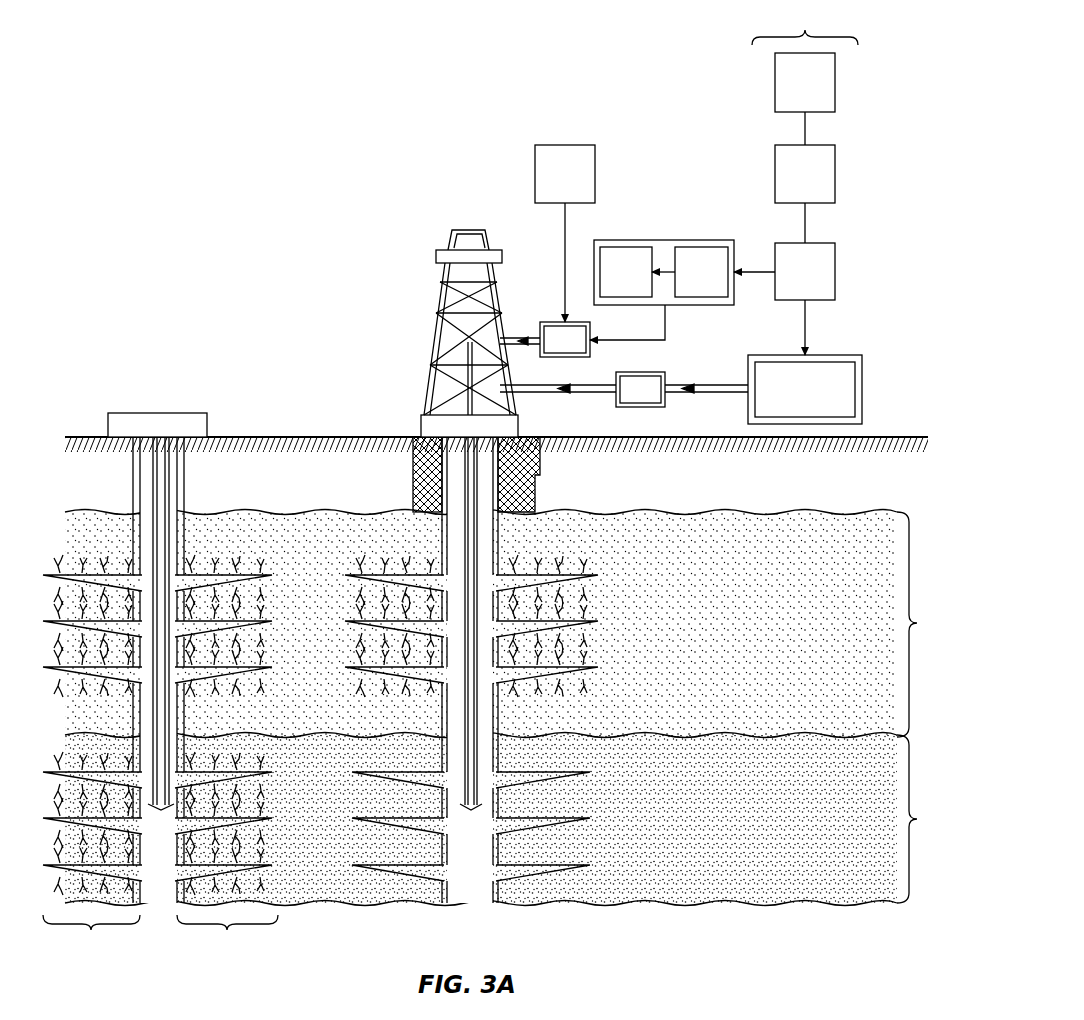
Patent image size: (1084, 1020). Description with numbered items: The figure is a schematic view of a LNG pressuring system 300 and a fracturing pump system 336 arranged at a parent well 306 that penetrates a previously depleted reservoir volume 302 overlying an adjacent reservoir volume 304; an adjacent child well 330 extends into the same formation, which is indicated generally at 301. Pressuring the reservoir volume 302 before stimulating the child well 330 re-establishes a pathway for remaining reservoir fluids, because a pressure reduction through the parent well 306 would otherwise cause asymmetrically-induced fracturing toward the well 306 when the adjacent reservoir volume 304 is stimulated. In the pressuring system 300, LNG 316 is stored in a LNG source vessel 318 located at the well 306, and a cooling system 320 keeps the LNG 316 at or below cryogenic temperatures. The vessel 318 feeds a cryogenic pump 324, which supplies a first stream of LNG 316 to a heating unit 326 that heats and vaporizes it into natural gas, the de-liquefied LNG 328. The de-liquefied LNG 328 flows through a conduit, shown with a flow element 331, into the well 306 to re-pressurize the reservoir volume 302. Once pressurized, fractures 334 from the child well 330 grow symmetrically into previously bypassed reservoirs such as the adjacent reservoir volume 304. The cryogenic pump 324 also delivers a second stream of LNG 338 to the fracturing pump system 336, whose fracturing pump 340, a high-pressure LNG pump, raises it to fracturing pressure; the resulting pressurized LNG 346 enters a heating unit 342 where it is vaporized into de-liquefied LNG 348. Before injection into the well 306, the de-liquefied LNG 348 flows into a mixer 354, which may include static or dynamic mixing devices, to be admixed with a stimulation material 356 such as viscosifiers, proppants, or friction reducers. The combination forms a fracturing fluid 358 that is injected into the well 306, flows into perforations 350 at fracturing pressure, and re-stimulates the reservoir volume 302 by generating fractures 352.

The LNG pressuring system 300 is at (717, 214).
The subterranean formation 301 is at (820, 495).
The reservoir volume 302 is at (514, 624).
The adjacent reservoir volume 304 is at (514, 819).
The parent well 306 is at (455, 497).
The LNG 316 is at (812, 228).
The LNG source vessel 318 is at (805, 174).
The cooling system 320 is at (805, 82).
The cryogenic pump 324 is at (805, 271).
The heating unit 326 is at (805, 389).
The de-liquefied LNG 328 is at (582, 385).
The child well 330 is at (172, 492).
The flow meter 331 is at (640, 389).
The fractures 334 is at (160, 940).
The fracturing pump system 336 is at (668, 150).
The second stream of LNG 338 is at (760, 272).
The fracturing pump 340 is at (701, 272).
The heating unit 342 is at (626, 272).
The pressurized LNG 346 is at (667, 271).
The de-liquefied LNG 348 is at (665, 315).
The perforations 350 is at (347, 575).
The fractures 352 is at (390, 710).
The mixer 354 is at (565, 339).
The stimulation material 356 is at (565, 233).
The fracturing fluid 358 is at (524, 345).